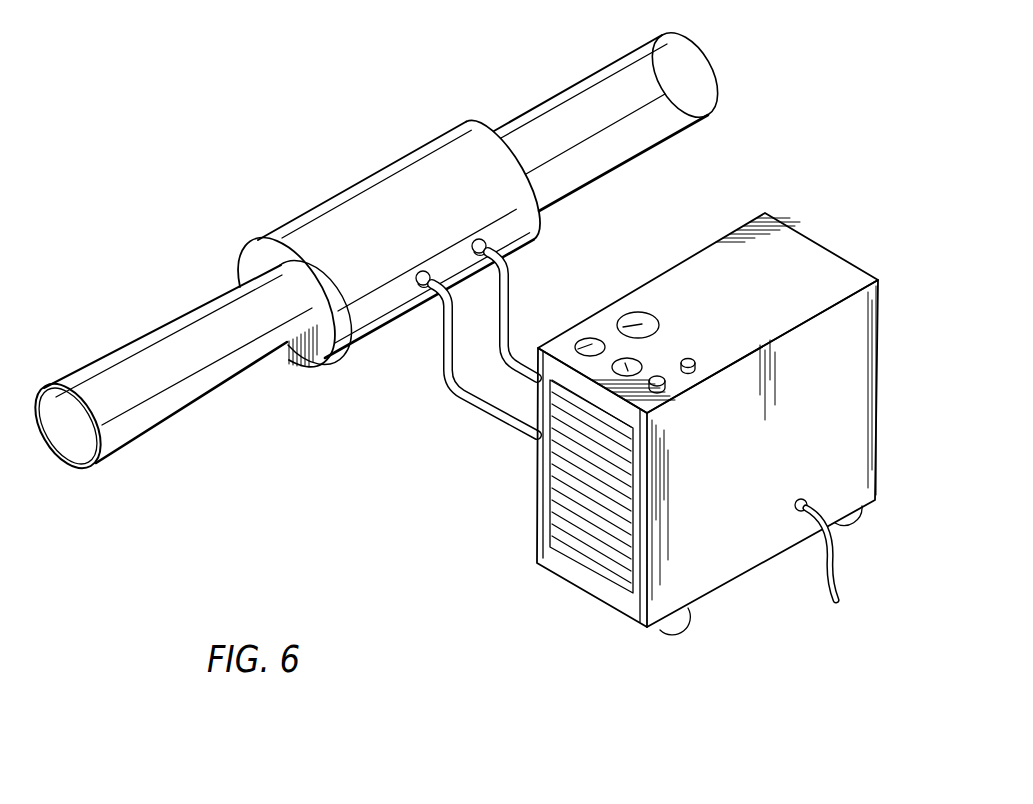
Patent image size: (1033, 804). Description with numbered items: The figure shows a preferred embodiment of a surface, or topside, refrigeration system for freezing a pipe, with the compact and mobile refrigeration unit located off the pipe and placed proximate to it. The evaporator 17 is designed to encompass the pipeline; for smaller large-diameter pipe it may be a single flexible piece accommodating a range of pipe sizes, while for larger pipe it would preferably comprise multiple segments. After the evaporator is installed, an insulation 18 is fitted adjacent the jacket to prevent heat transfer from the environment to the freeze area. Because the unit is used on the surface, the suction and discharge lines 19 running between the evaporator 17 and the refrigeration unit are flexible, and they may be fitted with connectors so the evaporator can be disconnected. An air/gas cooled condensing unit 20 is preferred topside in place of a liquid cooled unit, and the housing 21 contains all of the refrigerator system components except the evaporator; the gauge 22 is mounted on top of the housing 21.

The evaporator 17 is at (268, 240).
The insulation 18 is at (408, 172).
The suction and discharge lines 19 is at (438, 362).
The air/gas cooled condensing unit 20 is at (568, 583).
The housing 21 is at (808, 243).
The gauge 22 is at (637, 311).